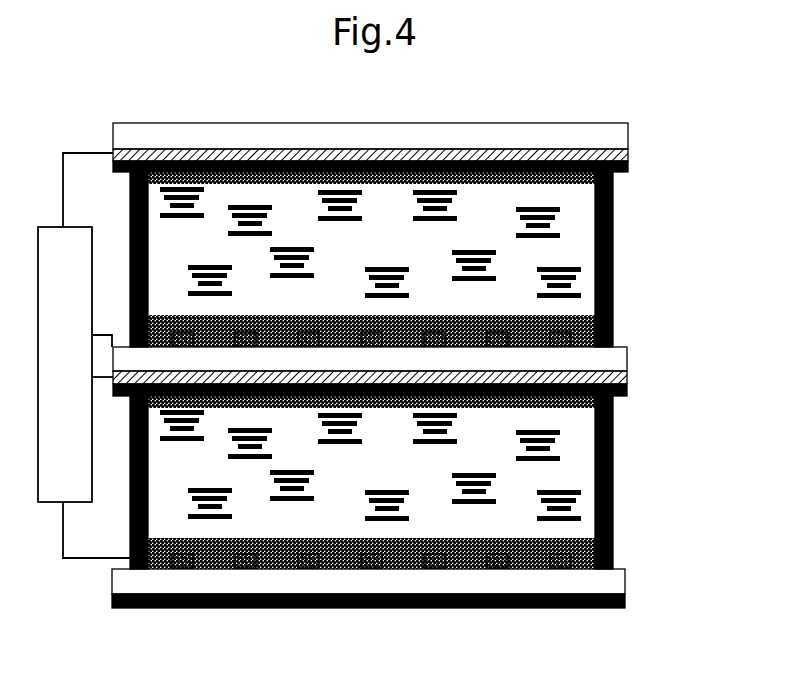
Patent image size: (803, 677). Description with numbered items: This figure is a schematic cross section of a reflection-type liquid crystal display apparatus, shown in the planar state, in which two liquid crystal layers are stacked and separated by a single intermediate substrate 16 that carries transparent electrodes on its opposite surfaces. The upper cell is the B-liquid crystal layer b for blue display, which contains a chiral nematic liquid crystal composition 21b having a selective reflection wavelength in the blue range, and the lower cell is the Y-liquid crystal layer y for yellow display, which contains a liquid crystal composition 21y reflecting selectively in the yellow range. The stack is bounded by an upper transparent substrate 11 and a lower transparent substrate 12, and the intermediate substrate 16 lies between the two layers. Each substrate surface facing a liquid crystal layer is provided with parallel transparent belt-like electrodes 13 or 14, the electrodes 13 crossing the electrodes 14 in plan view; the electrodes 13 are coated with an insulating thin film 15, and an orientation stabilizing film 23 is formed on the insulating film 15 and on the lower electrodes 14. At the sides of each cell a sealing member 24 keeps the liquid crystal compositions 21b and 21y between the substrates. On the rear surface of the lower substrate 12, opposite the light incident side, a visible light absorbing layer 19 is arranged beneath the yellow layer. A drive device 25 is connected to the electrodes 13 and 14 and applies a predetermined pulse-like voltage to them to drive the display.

The transparent substrate 11 is at (615, 142).
The transparent substrate 12 is at (613, 586).
The transparent belt-like electrodes 13 is at (630, 156).
The transparent belt-like electrodes 14 is at (606, 333).
The insulating thin film 15 is at (628, 168).
The intermediate substrate 16 is at (612, 362).
The visible light absorbing layer 19 is at (625, 607).
The liquid crystal composition 21b is at (562, 222).
The liquid crystal composition 21y is at (562, 450).
The orientation stabilizing film 23 is at (585, 160).
The sealing member 24 is at (600, 292).
The drive device 25 is at (82, 373).
The B-liquid crystal layer b is at (432, 242).
The Y-liquid crystal layer y is at (427, 465).